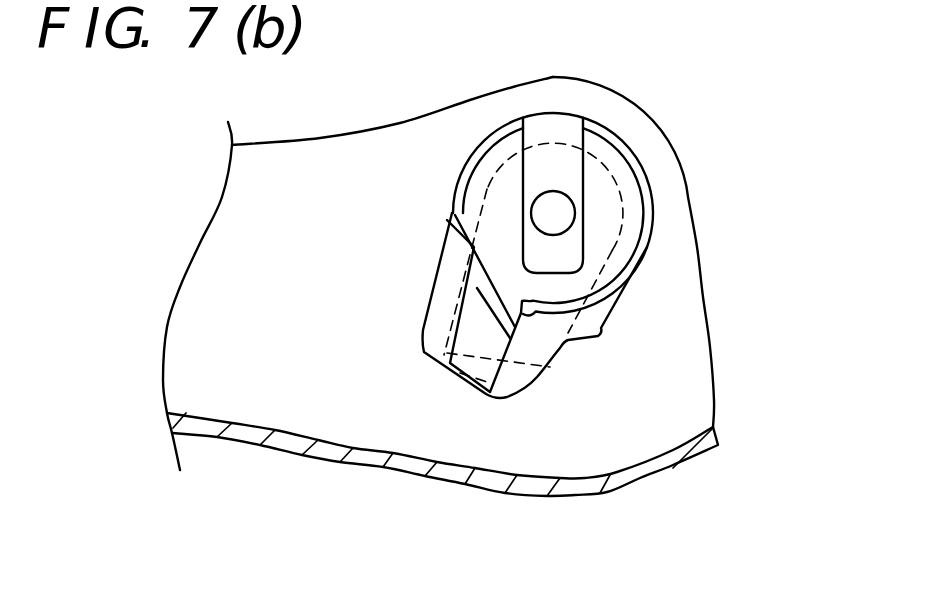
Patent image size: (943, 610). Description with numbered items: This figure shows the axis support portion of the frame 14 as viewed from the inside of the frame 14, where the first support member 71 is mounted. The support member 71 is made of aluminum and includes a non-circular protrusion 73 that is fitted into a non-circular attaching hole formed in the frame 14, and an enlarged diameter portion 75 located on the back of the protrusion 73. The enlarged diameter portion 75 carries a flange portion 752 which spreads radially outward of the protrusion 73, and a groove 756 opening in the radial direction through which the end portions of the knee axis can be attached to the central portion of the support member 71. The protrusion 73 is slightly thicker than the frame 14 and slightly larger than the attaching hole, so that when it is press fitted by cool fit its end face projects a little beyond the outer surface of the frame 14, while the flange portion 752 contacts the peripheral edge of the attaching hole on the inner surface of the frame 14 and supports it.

The frame 14 is at (458, 472).
The first support member 71 is at (475, 125).
The enlarged diameter portion 75 is at (640, 210).
The groove 756 is at (588, 179).
The flange portion 752 is at (613, 300).
The protrusion 73 is at (578, 319).